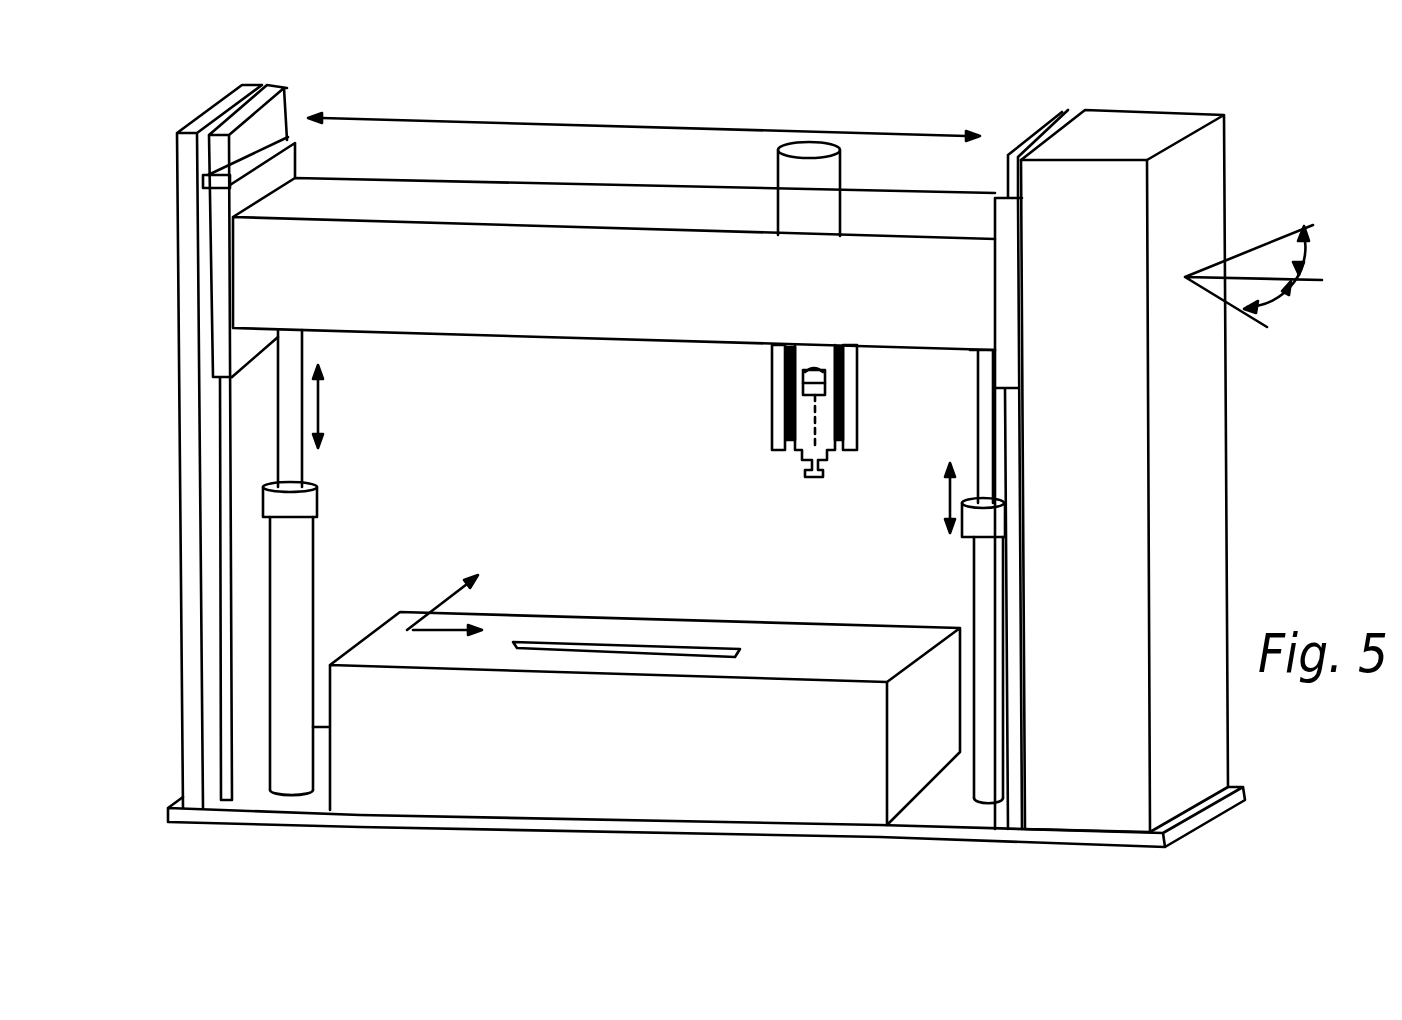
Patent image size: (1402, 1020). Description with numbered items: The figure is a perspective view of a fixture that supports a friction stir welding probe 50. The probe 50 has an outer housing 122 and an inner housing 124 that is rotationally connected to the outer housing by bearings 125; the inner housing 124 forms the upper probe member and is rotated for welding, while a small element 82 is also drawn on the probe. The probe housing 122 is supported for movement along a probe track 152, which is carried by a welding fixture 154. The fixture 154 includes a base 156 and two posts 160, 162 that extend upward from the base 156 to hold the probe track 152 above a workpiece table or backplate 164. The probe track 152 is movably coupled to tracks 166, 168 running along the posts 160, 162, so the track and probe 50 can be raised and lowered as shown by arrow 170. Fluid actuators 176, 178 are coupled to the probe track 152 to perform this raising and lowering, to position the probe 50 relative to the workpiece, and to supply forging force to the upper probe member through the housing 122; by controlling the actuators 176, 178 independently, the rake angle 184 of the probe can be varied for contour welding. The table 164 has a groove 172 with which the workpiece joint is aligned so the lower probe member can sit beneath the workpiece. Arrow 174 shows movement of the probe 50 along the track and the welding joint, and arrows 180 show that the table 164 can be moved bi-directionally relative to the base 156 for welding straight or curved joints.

The welding probe 50 is at (812, 377).
The sensor unit 82 is at (800, 383).
The outer housing 122 is at (850, 388).
The inner housing 124 is at (805, 415).
The bearings 125 is at (838, 350).
The probe track 152 is at (540, 176).
The welding fixture 154 is at (1172, 471).
The base 156 is at (940, 806).
The post 160 is at (188, 462).
The post 162 is at (1093, 593).
The workpiece table 164 is at (636, 703).
The track 166 is at (290, 156).
The track 168 is at (1000, 196).
The arrow 170 is at (320, 405).
The groove 172 is at (647, 648).
The arrow 174 is at (668, 130).
The fluid actuator 176 is at (303, 472).
The fluid actuator 178 is at (995, 484).
The arrows 180 is at (440, 603).
The rake angle 184 is at (1334, 240).